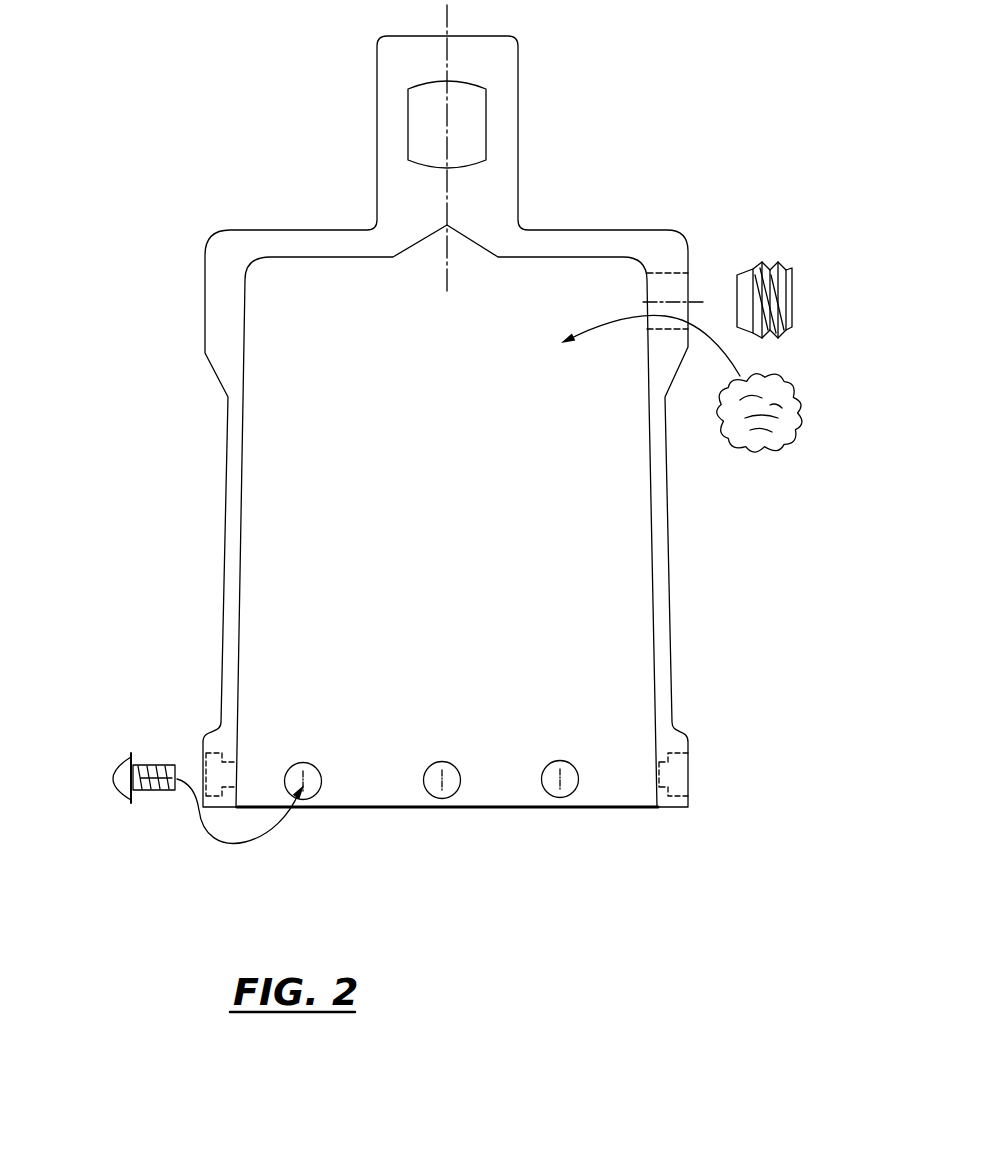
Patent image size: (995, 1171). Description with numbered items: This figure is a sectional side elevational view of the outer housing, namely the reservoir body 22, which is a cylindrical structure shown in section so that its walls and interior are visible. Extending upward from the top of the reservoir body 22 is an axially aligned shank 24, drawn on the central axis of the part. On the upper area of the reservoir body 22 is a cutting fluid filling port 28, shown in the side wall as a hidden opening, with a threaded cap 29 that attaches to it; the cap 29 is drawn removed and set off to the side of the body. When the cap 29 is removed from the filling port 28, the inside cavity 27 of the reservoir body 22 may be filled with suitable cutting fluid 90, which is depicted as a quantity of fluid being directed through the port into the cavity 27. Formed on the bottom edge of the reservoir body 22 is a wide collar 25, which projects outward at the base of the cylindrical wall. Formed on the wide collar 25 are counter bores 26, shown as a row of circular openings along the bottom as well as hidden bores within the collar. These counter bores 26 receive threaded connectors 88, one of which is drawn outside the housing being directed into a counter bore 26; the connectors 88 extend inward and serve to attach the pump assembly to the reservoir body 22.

The reservoir body 22 is at (150, 242).
The shank 24 is at (377, 115).
The wide collar 25 is at (203, 742).
The counter bores 26 is at (417, 768).
The inside cavity 27 is at (477, 447).
The cutting fluid filling port 28 is at (680, 292).
The threaded cap 29 is at (780, 268).
The threaded connectors 88 is at (113, 770).
The cutting fluid 90 is at (792, 386).